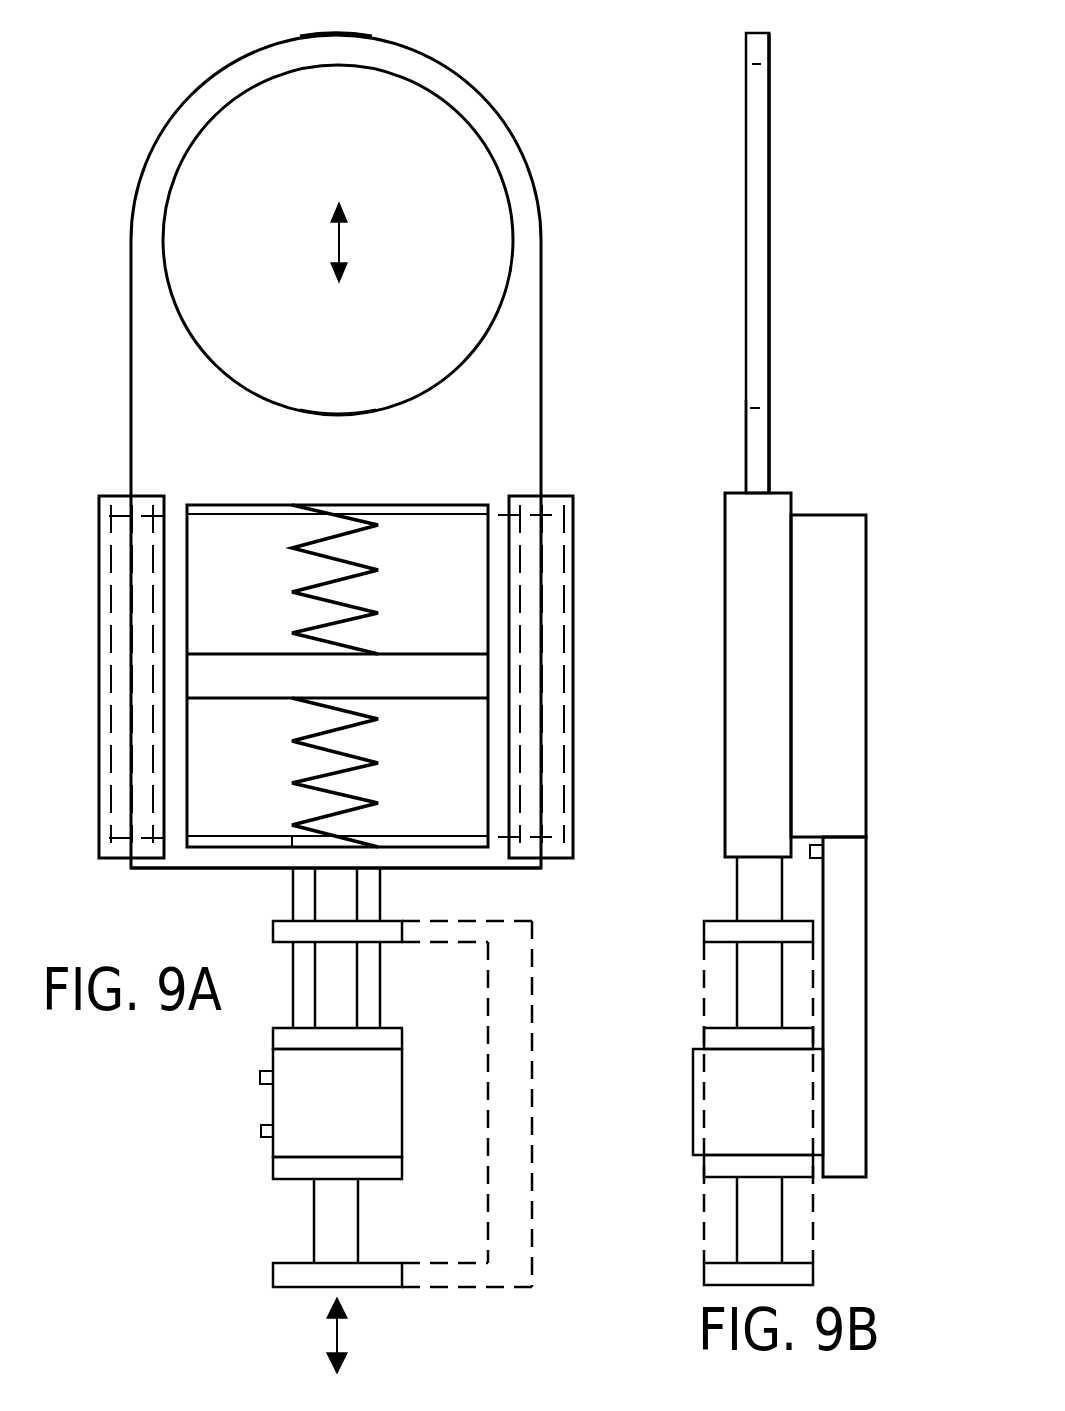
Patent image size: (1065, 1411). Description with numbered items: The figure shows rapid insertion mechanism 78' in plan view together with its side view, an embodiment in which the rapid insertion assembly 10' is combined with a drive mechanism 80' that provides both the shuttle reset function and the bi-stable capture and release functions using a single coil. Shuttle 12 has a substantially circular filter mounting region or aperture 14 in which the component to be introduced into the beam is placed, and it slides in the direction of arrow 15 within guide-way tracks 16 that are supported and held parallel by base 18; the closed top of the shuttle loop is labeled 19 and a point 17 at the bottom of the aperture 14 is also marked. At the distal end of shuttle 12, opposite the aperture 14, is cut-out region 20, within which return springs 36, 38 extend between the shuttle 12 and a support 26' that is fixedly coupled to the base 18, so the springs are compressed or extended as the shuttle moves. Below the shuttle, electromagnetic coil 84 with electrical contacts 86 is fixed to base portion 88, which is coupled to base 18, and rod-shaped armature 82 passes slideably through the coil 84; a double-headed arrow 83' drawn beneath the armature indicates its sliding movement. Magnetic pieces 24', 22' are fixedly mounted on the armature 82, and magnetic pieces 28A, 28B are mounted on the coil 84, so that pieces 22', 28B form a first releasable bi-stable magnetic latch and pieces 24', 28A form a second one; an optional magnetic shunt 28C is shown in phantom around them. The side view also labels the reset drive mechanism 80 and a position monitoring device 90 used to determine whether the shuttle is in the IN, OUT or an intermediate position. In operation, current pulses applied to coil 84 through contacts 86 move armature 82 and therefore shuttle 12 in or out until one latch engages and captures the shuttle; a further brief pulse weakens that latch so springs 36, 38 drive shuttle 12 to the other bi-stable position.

In FIG. 9A, the cutting head assembly 10' is at (620, 398).
In FIG. 9B, the cutting head assembly 10' is at (828, 383).
In FIG. 9A, the shuttle 12 is at (528, 368).
In FIG. 9B, the shuttle 12 is at (746, 432).
In FIG. 9A, the filter mounting region or aperture 14 is at (414, 206).
In FIG. 9B, the filter mounting region or aperture 14 is at (753, 212).
In FIG. 9A, the direction of shuttle motion 15 is at (337, 247).
In FIG. 9A, the guide-way tracks 16 is at (117, 505).
In FIG. 9B, the guide-way tracks 16 is at (725, 516).
In FIG. 9A, the contact point 17 is at (333, 415).
In FIG. 9B, the contact point 17 is at (760, 408).
In FIG. 9A, the base 18 is at (415, 848).
In FIG. 9B, the base 18 is at (833, 520).
In FIG. 9A, the top of frame 19 is at (342, 35).
In FIG. 9B, the top of frame 19 is at (763, 34).
In FIG. 9A, the cut-out region 20 is at (258, 577).
In FIG. 9A, the magnetic piece 22' is at (305, 1278).
In FIG. 9B, the magnetic piece 22' is at (727, 1276).
In FIG. 9A, the magnetic piece 24' is at (299, 934).
In FIG. 9B, the magnetic piece 24' is at (722, 933).
In FIG. 9A, the support 26' is at (337, 634).
In FIG. 9A, the magnetic piece 28A is at (280, 1042).
In FIG. 9B, the magnetic piece 28A is at (712, 1042).
In FIG. 9A, the magnetic piece 28B is at (282, 1165).
In FIG. 9B, the magnetic piece 28B is at (717, 1168).
In FIG. 9A, the magnetic shunt 28C is at (485, 1040).
In FIG. 9B, the magnetic shunt 28C is at (702, 1010).
In FIG. 9A, the return spring 36 is at (360, 563).
In FIG. 9A, the return spring 38 is at (356, 770).
In FIG. 9A, the rapid insertion mechanism 78' is at (75, 160).
In FIG. 9B, the rapid insertion mechanism 78' is at (652, 218).
In FIG. 9B, the reset drive mechanism 80 is at (636, 1336).
In FIG. 9A, the drive mechanism 80' is at (153, 1276).
In FIG. 9A, the armature 82 is at (345, 1224).
In FIG. 9B, the armature 82 is at (746, 877).
In FIG. 9A, the direction of shaft motion 83' is at (298, 1335).
In FIG. 9A, the electromagnetic coil 84 is at (380, 1098).
In FIG. 9B, the electromagnetic coil 84 is at (710, 1095).
In FIG. 9A, the electrical contacts 86 is at (258, 1073).
In FIG. 9A, the base portion 88 is at (300, 893).
In FIG. 9B, the base portion 88 is at (848, 1173).
In FIG. 9B, the position monitoring device 90 is at (810, 852).